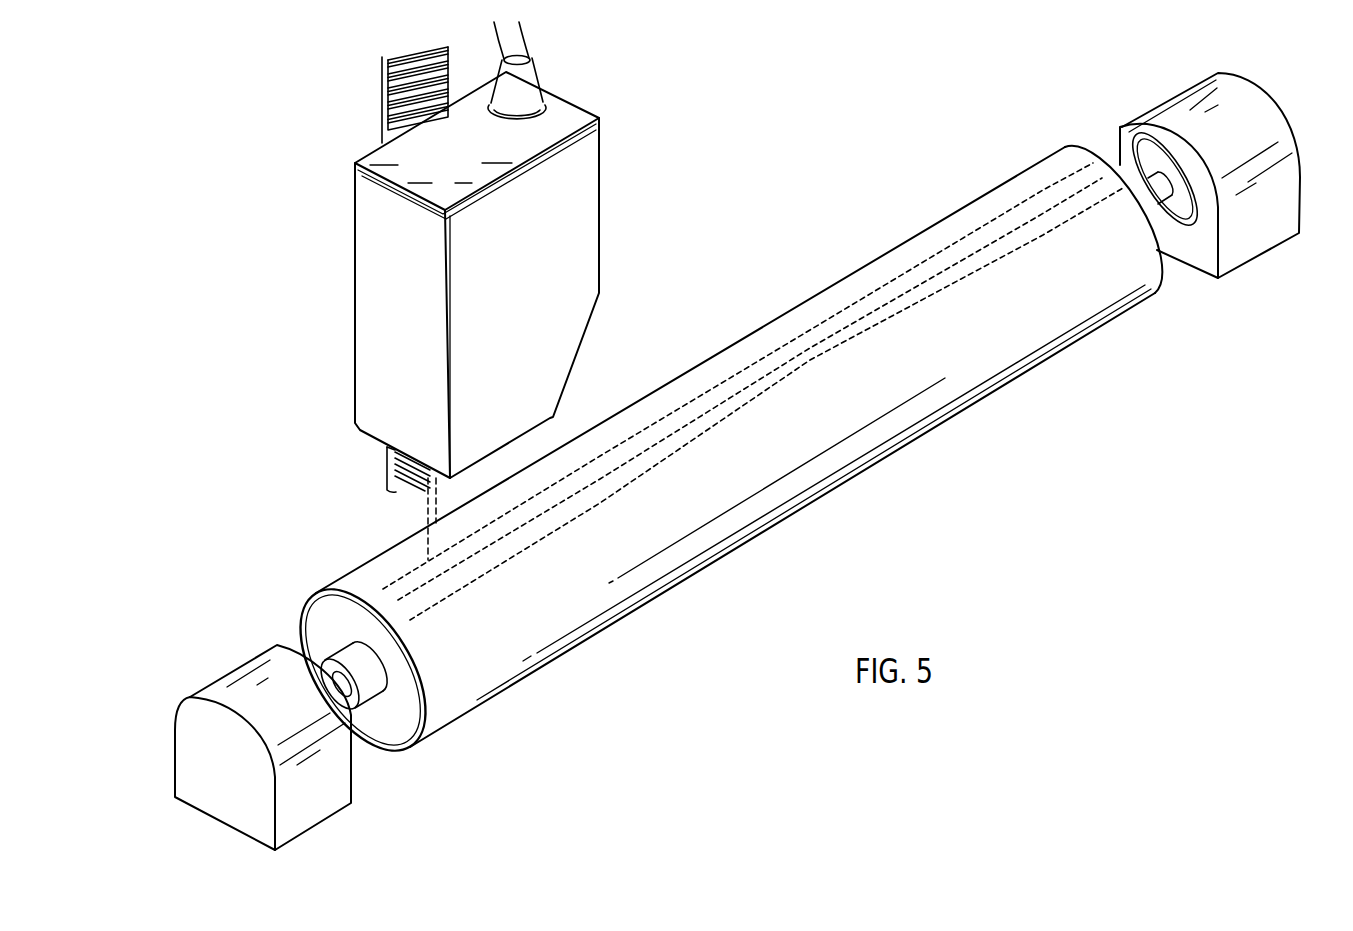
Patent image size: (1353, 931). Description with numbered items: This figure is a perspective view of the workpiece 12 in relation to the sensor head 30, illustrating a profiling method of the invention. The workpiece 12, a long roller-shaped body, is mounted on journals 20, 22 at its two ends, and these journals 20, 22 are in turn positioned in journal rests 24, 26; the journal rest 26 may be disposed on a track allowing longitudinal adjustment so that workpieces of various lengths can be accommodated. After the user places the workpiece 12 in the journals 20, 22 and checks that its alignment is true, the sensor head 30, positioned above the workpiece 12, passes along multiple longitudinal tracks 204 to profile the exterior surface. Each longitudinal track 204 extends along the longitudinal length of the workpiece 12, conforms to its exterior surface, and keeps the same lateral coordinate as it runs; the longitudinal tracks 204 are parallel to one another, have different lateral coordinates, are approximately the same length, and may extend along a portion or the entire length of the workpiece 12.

The workpiece 12 is at (781, 452).
The journal 20 is at (345, 677).
The journal 22 is at (1135, 152).
The journal rest 24 is at (322, 780).
The journal rest 26 is at (1245, 233).
The sensor head 30 is at (525, 304).
The longitudinal track 204 is at (427, 608).